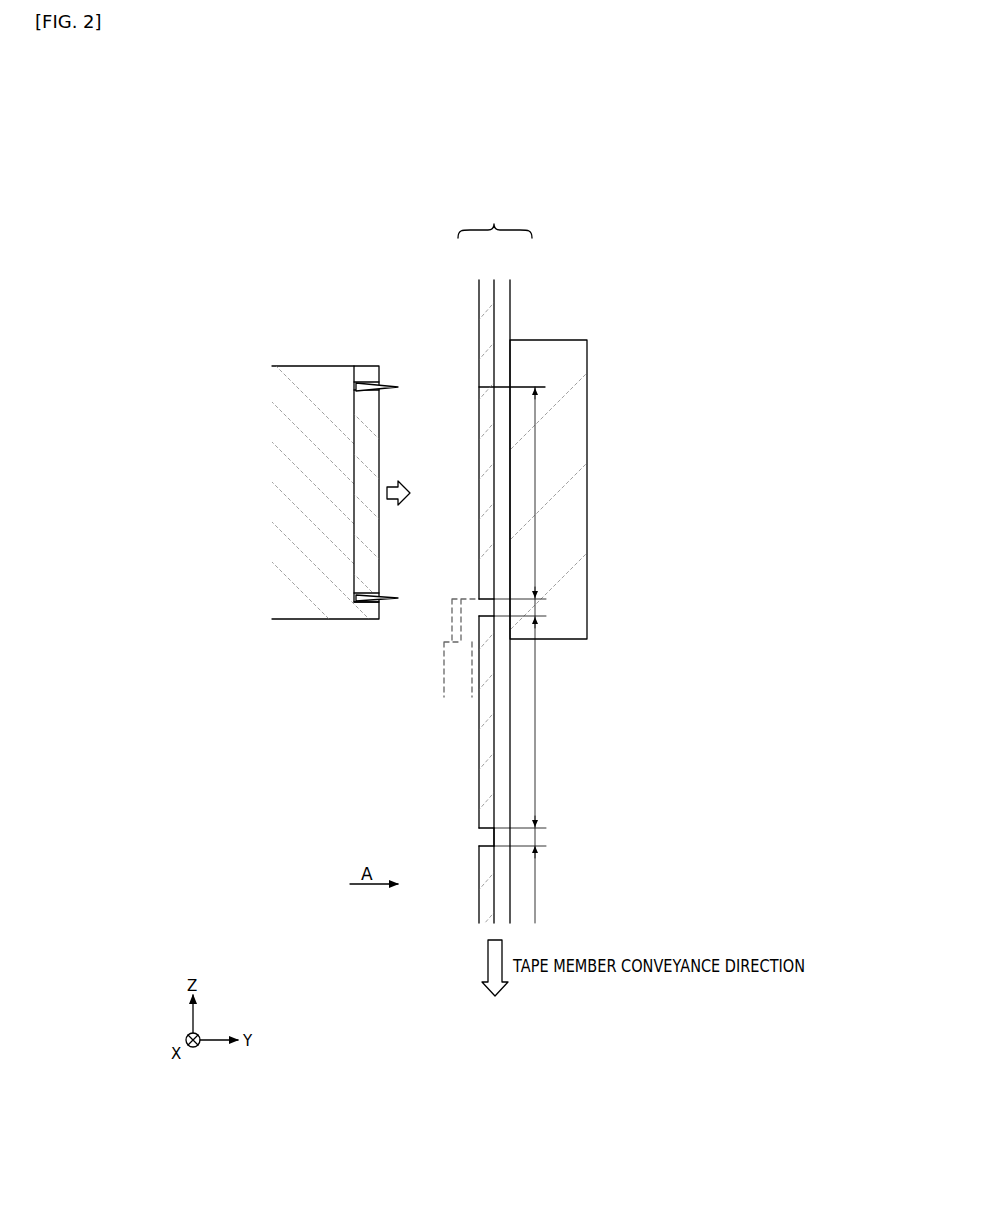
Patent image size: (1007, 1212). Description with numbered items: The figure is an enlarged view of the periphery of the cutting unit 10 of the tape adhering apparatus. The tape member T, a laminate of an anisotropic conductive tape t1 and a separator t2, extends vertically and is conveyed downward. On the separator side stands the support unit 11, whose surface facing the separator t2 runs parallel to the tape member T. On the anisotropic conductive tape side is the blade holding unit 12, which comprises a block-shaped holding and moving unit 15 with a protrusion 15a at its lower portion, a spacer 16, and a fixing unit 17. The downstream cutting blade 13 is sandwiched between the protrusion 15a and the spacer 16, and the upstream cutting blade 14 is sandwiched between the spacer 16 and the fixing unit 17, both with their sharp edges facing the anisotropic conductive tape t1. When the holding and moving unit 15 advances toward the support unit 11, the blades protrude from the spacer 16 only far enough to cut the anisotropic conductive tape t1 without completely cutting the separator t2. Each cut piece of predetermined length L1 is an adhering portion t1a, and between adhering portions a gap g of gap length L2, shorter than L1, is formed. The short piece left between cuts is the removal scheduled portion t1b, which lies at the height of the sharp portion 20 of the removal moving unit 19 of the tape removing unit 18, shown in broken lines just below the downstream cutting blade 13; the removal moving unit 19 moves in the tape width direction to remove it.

The cutting unit 10 is at (562, 573).
The support unit 11 is at (582, 433).
The blade holding unit 12 is at (325, 474).
The downstream cutting blade 13 is at (391, 603).
The upstream cutting blade 14 is at (383, 387).
The holding and moving unit 15 is at (276, 513).
The protrusion 15a is at (372, 620).
The spacer 16 is at (368, 458).
The fixing unit 17 is at (367, 376).
The tape removing unit 18 is at (430, 668).
The removal moving unit 19 is at (452, 668).
The sharp portion 20 is at (483, 608).
The tape member T is at (495, 218).
The anisotropic conductive tape t1 is at (487, 280).
The separator t2 is at (502, 280).
The adhering portion t1a is at (484, 400).
The removal scheduled portion t1b is at (486, 603).
The gap g is at (497, 829).
The predetermined length L1 is at (529, 655).
The gap length L2 is at (553, 722).